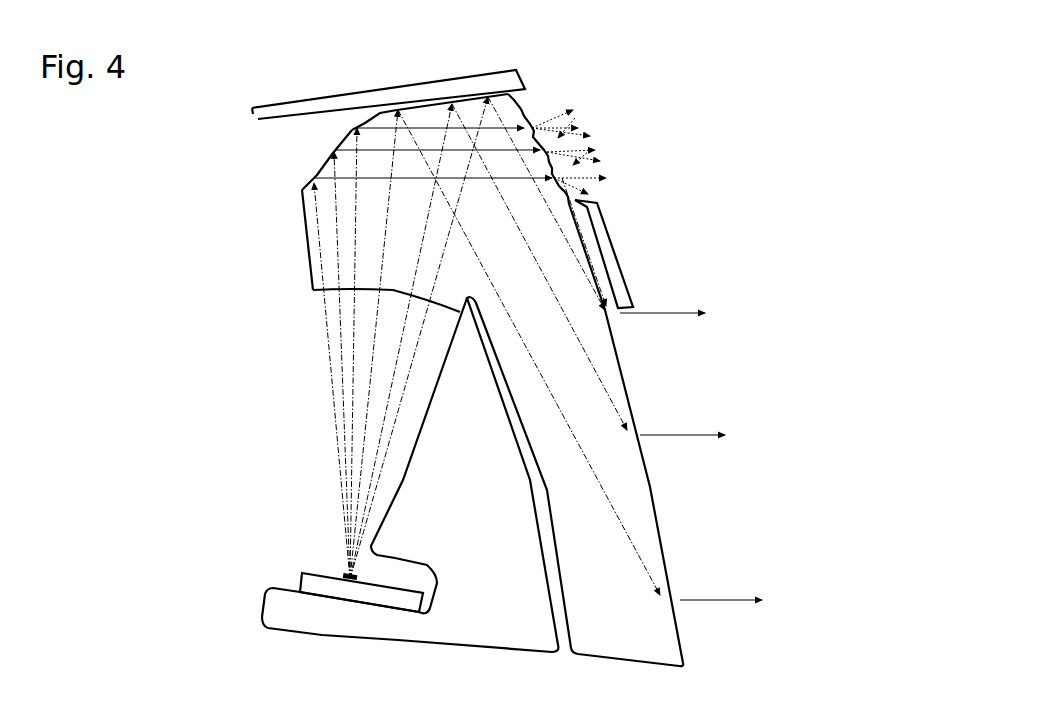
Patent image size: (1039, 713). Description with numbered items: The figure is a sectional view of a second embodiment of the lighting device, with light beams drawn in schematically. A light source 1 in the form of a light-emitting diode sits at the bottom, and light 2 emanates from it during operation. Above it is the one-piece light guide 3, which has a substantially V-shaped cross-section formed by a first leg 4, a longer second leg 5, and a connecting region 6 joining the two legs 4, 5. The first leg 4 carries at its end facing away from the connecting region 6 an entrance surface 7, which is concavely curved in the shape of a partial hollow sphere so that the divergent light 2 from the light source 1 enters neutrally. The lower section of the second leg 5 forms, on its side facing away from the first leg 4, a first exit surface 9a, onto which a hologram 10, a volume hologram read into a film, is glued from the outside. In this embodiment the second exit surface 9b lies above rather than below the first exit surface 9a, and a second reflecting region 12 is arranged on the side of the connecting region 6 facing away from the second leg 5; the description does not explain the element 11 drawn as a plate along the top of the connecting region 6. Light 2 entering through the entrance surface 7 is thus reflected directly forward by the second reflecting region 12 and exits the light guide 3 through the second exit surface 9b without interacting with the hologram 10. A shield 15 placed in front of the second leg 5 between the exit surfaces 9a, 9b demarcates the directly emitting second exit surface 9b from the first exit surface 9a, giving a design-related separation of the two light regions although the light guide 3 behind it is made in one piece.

The light source 1 is at (340, 568).
The light 2 is at (343, 374).
The light guide 3 is at (716, 362).
The first leg 4 is at (301, 279).
The second leg 5 is at (682, 560).
The connecting region 6 is at (275, 162).
The entrance surface 7 is at (393, 290).
The first exit surface 9a is at (726, 433).
The second exit surface 9b is at (553, 167).
The hologram 10 is at (648, 489).
The reflective cover plate 11 is at (416, 104).
The second reflecting region 12 is at (342, 130).
The shield 15 is at (617, 255).